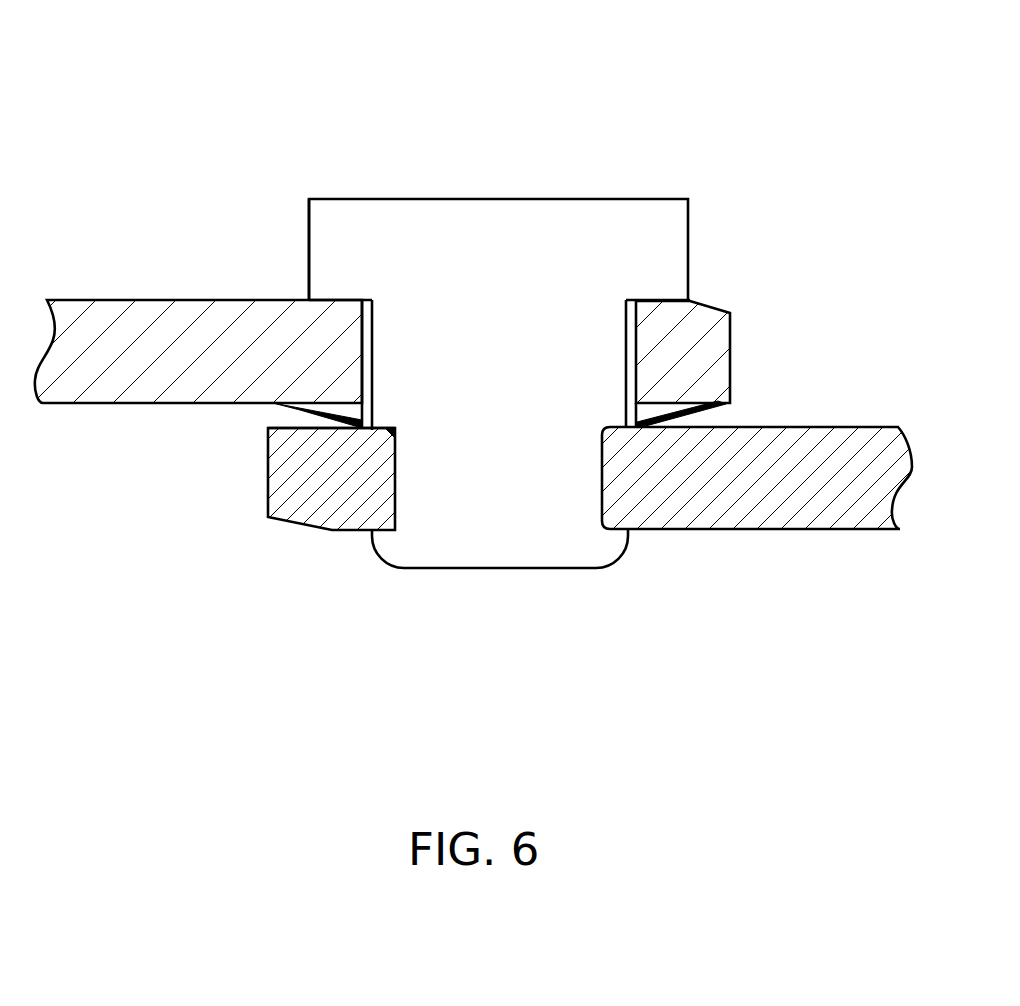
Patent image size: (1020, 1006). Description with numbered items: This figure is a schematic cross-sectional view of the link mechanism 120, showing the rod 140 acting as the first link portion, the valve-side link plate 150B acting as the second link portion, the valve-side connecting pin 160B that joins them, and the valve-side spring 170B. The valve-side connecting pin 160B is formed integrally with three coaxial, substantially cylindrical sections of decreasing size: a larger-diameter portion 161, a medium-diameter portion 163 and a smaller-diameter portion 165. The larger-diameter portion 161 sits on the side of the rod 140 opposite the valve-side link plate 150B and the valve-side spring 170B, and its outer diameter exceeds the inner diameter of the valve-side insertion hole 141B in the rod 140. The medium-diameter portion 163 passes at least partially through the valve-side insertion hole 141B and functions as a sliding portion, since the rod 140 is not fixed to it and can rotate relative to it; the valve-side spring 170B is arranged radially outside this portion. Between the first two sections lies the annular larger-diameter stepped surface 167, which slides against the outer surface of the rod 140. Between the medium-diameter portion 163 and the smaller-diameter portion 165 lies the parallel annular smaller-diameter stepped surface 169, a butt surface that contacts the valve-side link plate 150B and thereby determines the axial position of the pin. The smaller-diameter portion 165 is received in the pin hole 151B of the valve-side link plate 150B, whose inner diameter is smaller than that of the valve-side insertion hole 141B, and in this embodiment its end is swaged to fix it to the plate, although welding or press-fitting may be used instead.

The link mechanism 120 is at (218, 72).
The rod 140 is at (110, 300).
The valve-side insertion hole 141B is at (372, 365).
The valve-side connecting pin 160B is at (447, 199).
The larger-diameter portion 161 is at (308, 220).
The larger-diameter stepped surface 167 is at (341, 300).
The medium-diameter portion 163 is at (362, 340).
The valve-side spring 170B is at (300, 419).
The smaller-diameter stepped surface 169 is at (381, 430).
The smaller-diameter portion 165 is at (395, 481).
The pin hole 151B is at (397, 485).
The valve-side link plate 150B is at (828, 427).